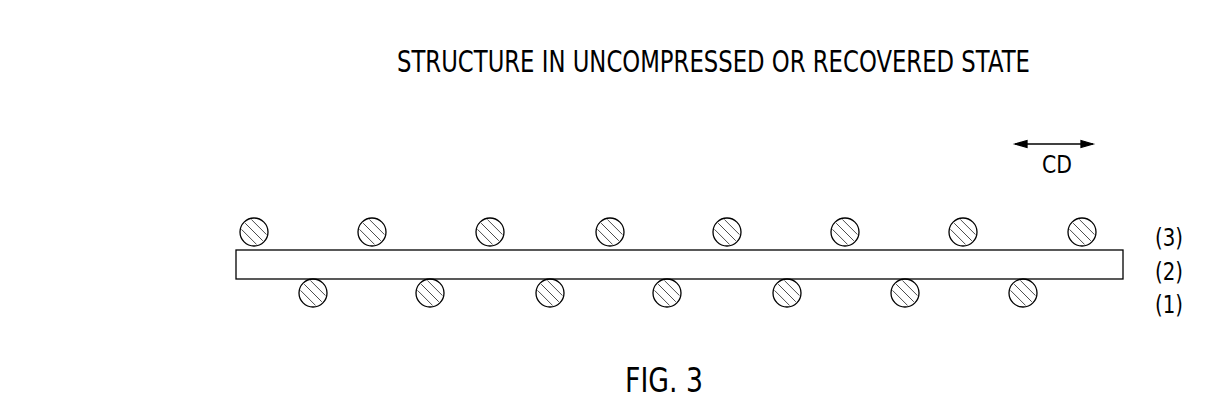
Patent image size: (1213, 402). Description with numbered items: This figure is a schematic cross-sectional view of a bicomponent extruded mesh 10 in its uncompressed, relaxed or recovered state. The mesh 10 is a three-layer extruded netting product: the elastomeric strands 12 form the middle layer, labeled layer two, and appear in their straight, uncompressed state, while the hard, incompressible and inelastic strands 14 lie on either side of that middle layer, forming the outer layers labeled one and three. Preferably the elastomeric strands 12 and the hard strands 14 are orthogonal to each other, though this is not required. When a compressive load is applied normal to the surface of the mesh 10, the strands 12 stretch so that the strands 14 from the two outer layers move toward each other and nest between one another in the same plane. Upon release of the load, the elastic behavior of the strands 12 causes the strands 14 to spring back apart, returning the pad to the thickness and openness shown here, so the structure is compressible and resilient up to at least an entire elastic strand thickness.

The bicomponent extruded mesh 10 is at (287, 130).
The elastomeric strands 12 is at (318, 236).
The hard strands 14 is at (932, 226).